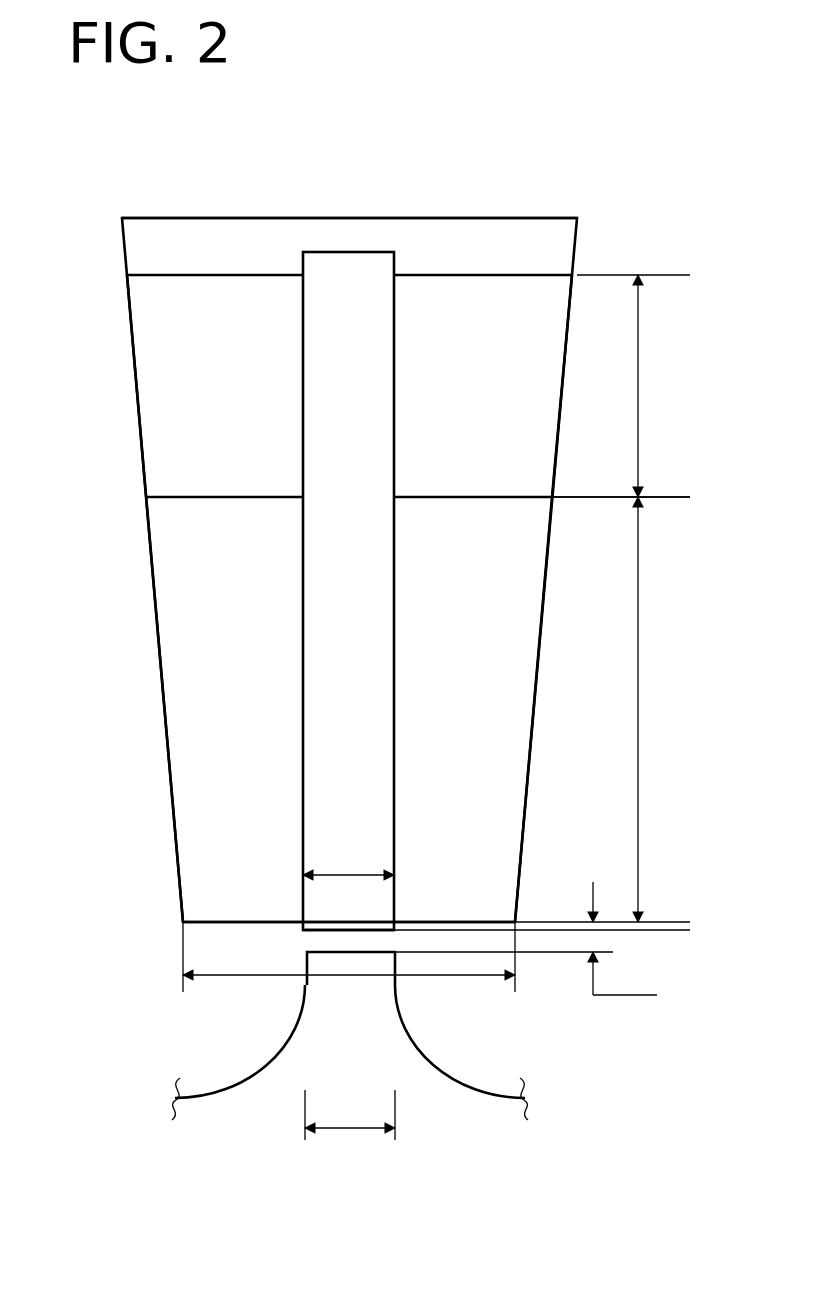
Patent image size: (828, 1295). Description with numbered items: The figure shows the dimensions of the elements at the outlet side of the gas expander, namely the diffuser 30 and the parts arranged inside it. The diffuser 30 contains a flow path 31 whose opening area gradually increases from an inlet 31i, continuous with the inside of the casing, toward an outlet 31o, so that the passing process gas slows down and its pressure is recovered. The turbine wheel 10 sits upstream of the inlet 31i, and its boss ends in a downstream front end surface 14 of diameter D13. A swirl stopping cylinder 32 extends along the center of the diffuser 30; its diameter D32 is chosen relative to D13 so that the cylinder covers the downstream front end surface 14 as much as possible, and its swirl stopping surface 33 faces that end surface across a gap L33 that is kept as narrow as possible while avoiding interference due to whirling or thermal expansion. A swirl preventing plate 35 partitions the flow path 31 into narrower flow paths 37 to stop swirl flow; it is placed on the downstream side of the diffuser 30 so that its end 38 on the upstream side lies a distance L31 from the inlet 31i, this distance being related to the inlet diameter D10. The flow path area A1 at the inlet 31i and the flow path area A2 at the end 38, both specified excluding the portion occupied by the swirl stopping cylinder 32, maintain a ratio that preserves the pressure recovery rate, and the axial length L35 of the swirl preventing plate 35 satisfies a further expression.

The turbine wheel 10 is at (240, 1065).
The downstream front end surface 14 is at (327, 952).
The diffuser 30 is at (178, 214).
The flow path 31 is at (349, 709).
The outlet 31o is at (140, 218).
The inlet 31i is at (300, 925).
The swirl stopping cylinder 32 is at (303, 757).
The swirl stopping surface 33 is at (368, 931).
The swirl preventing plate 35 is at (220, 275).
The flow paths 37 is at (349, 386).
The end on the upstream side 38 is at (673, 497).
The flow path area at the inlet A1 is at (198, 922).
The flow path area at the upstream end of the swirl preventing plate A2 is at (187, 497).
The distance from the inlet to the upstream end of the swirl preventing plate L31 is at (609, 709).
The gap L33 is at (542, 938).
The axial dimension of the swirl preventing plate L35 is at (628, 386).
The diameter of the inlet D10 is at (349, 968).
The diameter of the downstream front end surface D13 is at (350, 1130).
The diameter of the swirl stopping cylinder D32 is at (348, 855).